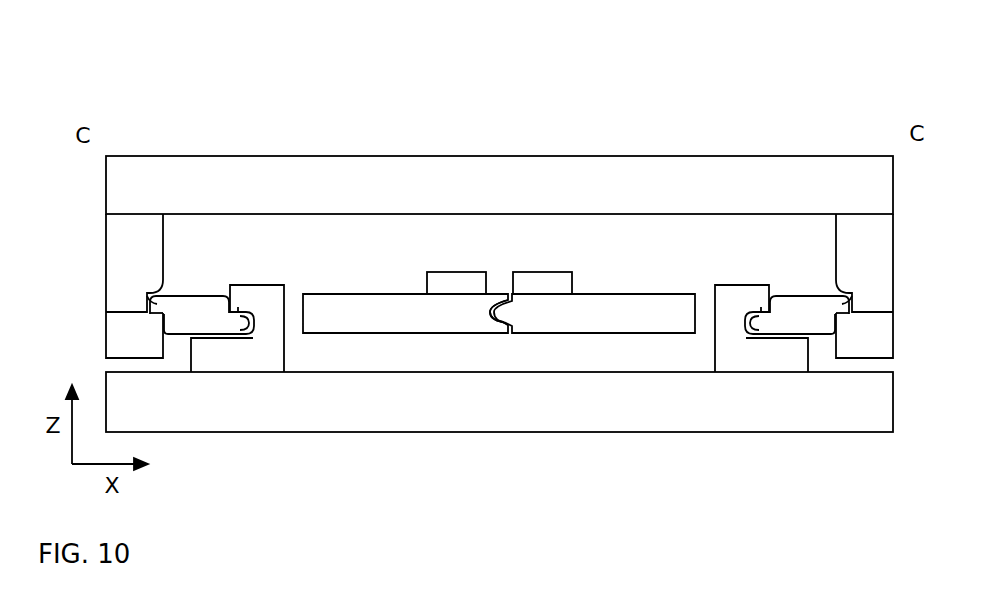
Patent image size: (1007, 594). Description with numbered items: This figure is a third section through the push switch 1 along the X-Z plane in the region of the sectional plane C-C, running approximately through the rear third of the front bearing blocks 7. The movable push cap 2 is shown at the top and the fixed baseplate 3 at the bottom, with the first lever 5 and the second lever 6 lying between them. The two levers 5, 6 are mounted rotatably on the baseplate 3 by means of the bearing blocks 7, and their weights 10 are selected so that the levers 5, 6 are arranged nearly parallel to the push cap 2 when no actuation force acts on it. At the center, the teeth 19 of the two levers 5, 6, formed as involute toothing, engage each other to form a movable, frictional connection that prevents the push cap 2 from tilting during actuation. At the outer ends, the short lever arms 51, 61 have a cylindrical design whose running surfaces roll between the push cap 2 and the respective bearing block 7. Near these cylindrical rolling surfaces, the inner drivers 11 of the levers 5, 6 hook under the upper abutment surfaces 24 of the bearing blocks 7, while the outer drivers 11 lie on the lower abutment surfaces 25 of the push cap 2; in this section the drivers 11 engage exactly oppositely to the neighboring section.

The push switch 1 is at (402, 127).
The push cap 2 is at (605, 157).
The baseplate 3 is at (727, 432).
The first lever 5 is at (382, 294).
The second lever 6 is at (622, 294).
The bearing blocks 7 is at (284, 343).
The weights 10 is at (545, 270).
The drivers 11 is at (157, 303).
The teeth 19 is at (500, 320).
The upper abutment surfaces 24 is at (238, 312).
The lower abutment surfaces 25 is at (155, 313).
The short lever arm 51 is at (197, 310).
The short lever arm 61 is at (800, 311).